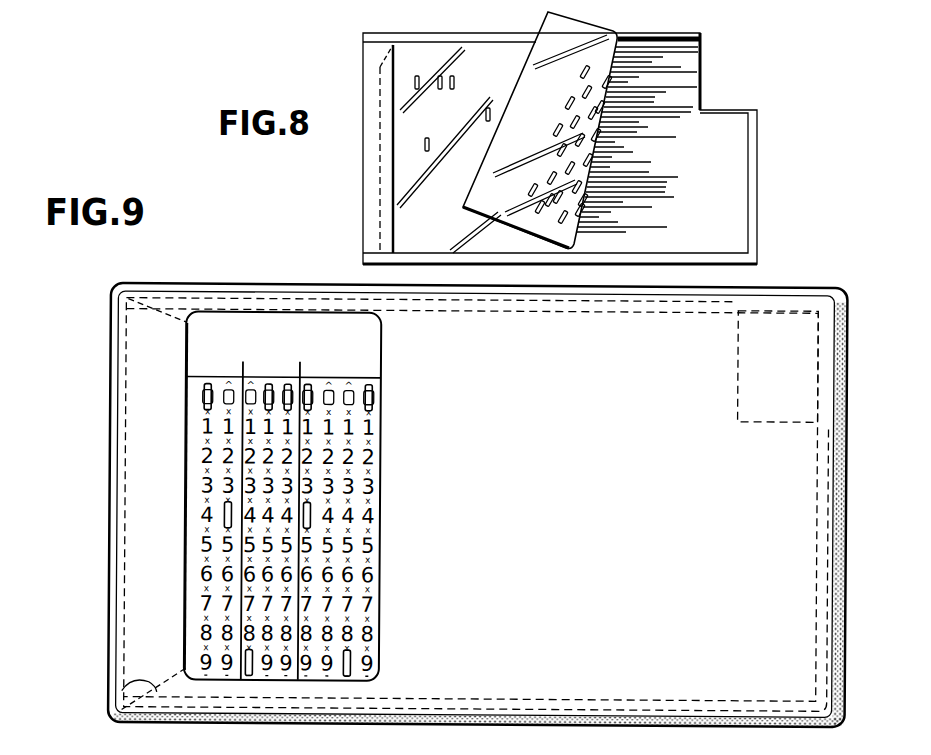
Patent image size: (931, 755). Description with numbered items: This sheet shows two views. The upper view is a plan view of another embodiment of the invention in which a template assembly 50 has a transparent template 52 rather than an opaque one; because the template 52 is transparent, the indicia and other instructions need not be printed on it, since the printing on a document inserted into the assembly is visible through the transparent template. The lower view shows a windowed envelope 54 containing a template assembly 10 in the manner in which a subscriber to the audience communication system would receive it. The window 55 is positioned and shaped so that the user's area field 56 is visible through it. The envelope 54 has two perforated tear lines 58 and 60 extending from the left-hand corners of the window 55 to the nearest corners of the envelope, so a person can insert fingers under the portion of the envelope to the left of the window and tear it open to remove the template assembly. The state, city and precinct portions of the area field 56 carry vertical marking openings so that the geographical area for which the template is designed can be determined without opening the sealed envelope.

In FIG. 8, the template assembly 10 is at (123, 4).
In FIG. 9, the template assembly 10 is at (703, 350).
In FIG. 8, the template assembly 50 is at (360, 70).
In FIG. 8, the transparent template 52 is at (540, 75).
In FIG. 9, the windowed envelope 54 is at (810, 286).
In FIG. 9, the window 55 is at (378, 582).
In FIG. 9, the user's area field 56 is at (247, 316).
In FIG. 9, the perforated tear line 58 is at (145, 301).
In FIG. 9, the perforated tear line 60 is at (123, 693).